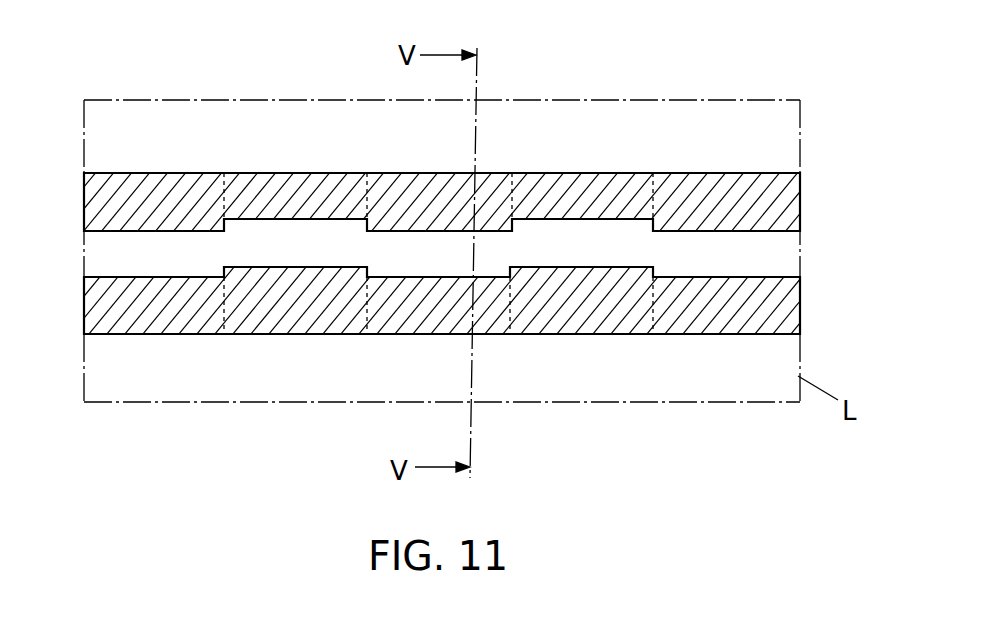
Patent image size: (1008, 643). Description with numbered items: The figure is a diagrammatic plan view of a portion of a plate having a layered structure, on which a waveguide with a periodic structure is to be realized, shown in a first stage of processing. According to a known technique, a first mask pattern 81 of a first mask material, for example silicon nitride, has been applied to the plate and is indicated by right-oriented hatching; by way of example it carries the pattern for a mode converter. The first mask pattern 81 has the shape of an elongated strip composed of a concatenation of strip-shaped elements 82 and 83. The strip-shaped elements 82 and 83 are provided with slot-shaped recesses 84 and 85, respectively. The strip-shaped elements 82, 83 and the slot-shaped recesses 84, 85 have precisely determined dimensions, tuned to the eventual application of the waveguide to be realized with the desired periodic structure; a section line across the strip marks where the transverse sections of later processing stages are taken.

The first mask pattern 81 is at (170, 348).
The strip-shaped element 82 is at (269, 193).
The strip-shaped element 83 is at (139, 196).
The slot-shaped recess 84 is at (285, 243).
The slot-shaped recess 85 is at (125, 252).